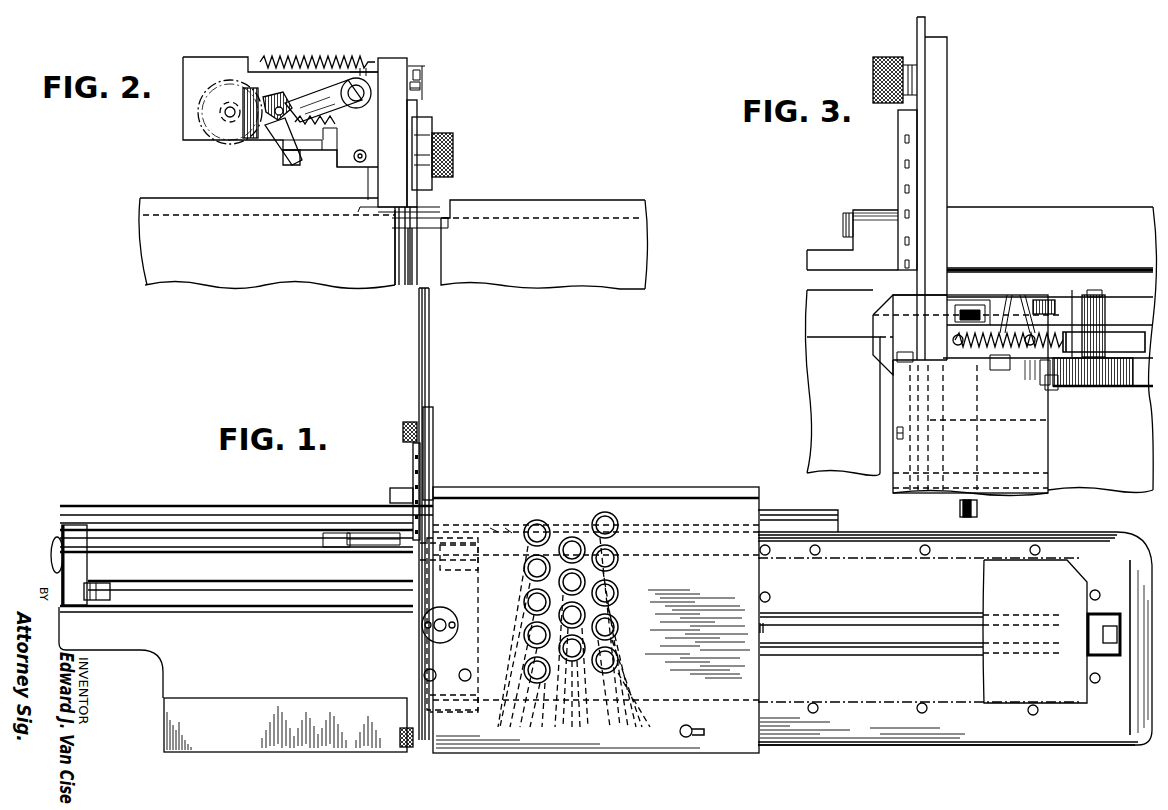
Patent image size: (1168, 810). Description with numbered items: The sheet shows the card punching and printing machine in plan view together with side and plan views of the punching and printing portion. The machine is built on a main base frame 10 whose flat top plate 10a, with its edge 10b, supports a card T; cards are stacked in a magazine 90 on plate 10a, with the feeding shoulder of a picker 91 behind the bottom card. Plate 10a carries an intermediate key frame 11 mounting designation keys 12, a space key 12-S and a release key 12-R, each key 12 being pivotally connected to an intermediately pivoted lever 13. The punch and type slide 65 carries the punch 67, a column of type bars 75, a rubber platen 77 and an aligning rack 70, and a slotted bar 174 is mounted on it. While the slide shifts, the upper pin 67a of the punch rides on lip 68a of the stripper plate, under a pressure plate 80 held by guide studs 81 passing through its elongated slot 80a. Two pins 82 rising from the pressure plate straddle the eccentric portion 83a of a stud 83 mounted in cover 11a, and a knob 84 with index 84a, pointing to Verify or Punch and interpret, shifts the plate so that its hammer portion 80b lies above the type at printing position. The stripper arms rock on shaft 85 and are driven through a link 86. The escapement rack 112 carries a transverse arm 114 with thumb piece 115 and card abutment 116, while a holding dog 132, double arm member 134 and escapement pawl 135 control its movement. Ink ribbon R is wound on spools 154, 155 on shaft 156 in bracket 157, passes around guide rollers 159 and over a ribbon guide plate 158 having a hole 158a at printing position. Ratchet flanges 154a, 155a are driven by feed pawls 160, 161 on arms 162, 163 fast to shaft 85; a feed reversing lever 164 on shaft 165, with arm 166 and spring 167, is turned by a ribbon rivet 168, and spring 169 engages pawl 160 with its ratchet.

In FIG. 2, the main base frame 10 is at (268, 250).
In FIG. 3, the main base frame 10 is at (812, 346).
In FIG. 1, the main base frame 10 is at (258, 722).
In FIG. 2, the top flat plate 10a is at (228, 205).
In FIG. 3, the top flat plate 10a is at (815, 404).
In FIG. 1, the top flat plate 10a is at (178, 677).
In FIG. 2, the base edge 10b is at (145, 200).
In FIG. 1, the base edge 10b is at (238, 548).
In FIG. 1, the intermediate frame 11 is at (506, 498).
In FIG. 1, the cover of key frame 11a is at (448, 735).
In FIG. 1, the designation keys 12 is at (614, 652).
In FIG. 1, the release key 12-R is at (618, 522).
In FIG. 1, the space key 12-S is at (528, 668).
In FIG. 1, the intermediately pivoted lever 13 is at (626, 692).
In FIG. 2, the punch and type slide 65 is at (418, 122).
In FIG. 3, the punch and type slide 65 is at (908, 118).
In FIG. 1, the punch and type slide 65 is at (428, 422).
In FIG. 2, the punch 67 is at (428, 82).
In FIG. 3, the punch 67 is at (895, 435).
In FIG. 2, the upper pin of punch 67a is at (427, 72).
In FIG. 2, the lip of stripper plate 68a is at (428, 92).
In FIG. 2, the aligning rack 70 is at (398, 282).
In FIG. 1, the aligning rack 70 is at (431, 342).
In FIG. 2, the type bars 75 is at (422, 196).
In FIG. 3, the type bars 75 is at (902, 190).
In FIG. 1, the type bars 75 is at (421, 466).
In FIG. 2, the rubber platen 77 is at (432, 232).
In FIG. 2, the pressure plate 80 is at (412, 63).
In FIG. 3, the pressure plate 80 is at (1038, 455).
In FIG. 1, the pressure plate 80 is at (465, 624).
In FIG. 1, the elongated slot of pressure plate 80a is at (425, 700).
In FIG. 3, the hammer portion 80b is at (882, 374).
In FIG. 1, the guide studs 81 is at (437, 678).
In FIG. 1, the pins 82 is at (471, 673).
In FIG. 1, the stud 83 is at (460, 620).
In FIG. 1, the eccentric portion 83a is at (432, 622).
In FIG. 1, the knob 84 is at (430, 645).
In FIG. 1, the index 84a is at (425, 603).
In FIG. 2, the shaft 85 is at (357, 106).
In FIG. 3, the shaft 85 is at (978, 510).
In FIG. 1, the shaft 85 is at (398, 724).
In FIG. 1, the link 86 is at (478, 708).
In FIG. 1, the magazine 90 is at (918, 709).
In FIG. 1, the picker 91 is at (1092, 645).
In FIG. 1, the escapement rack 112 is at (110, 520).
In FIG. 1, the transverse arm 114 is at (80, 568).
In FIG. 1, the thumb piece 115 is at (50, 556).
In FIG. 1, the abutment 116 is at (110, 592).
In FIG. 1, the holding dog 132 is at (395, 505).
In FIG. 1, the double arm member 134 is at (370, 533).
In FIG. 1, the escapement pawl 135 is at (343, 533).
In FIG. 2, the ribbon spool 154 is at (214, 128).
In FIG. 3, the ribbon spool 154 is at (1118, 292).
In FIG. 1, the ribbon spool 154 is at (512, 534).
In FIG. 3, the ratchet flange 154a is at (1072, 290).
In FIG. 3, the ribbon spool 155 is at (1108, 387).
In FIG. 1, the ribbon spool 155 is at (475, 548).
In FIG. 3, the ratchet flange 155a is at (1058, 392).
In FIG. 2, the shaft 156 is at (224, 112).
In FIG. 3, the shaft 156 is at (1100, 282).
In FIG. 2, the fixed bracket 157 is at (200, 62).
In FIG. 3, the fixed bracket 157 is at (1140, 333).
In FIG. 2, the ribbon guide plate 158 is at (368, 215).
In FIG. 3, the ribbon guide plate 158 is at (873, 318).
In FIG. 3, the hole 158a is at (905, 352).
In FIG. 2, the guide roller 159 is at (352, 160).
In FIG. 2, the feed pawl 160 is at (277, 95).
In FIG. 3, the feed pawl 160 is at (1032, 330).
In FIG. 3, the feed pawl 161 is at (1040, 385).
In FIG. 2, the arm 162 is at (328, 90).
In FIG. 3, the arm 162 is at (1003, 330).
In FIG. 3, the arm 163 is at (995, 372).
In FIG. 2, the feed reversing lever 164 is at (292, 160).
In FIG. 3, the feed reversing lever 164 is at (1034, 263).
In FIG. 2, the shaft 165 is at (304, 90).
In FIG. 3, the shaft 165 is at (1026, 380).
In FIG. 2, the arm 166 is at (285, 66).
In FIG. 3, the arm 166 is at (1065, 345).
In FIG. 2, the spring 167 is at (362, 75).
In FIG. 3, the spring 167 is at (1000, 300).
In FIG. 2, the rivet 168 is at (250, 122).
In FIG. 2, the spring 169 is at (301, 165).
In FIG. 2, the bar 174 is at (420, 268).
In FIG. 1, the bar 174 is at (417, 352).
In FIG. 2, the ink ribbon R is at (368, 184).
In FIG. 3, the ink ribbon R is at (990, 300).
In FIG. 1, the card T is at (1068, 563).